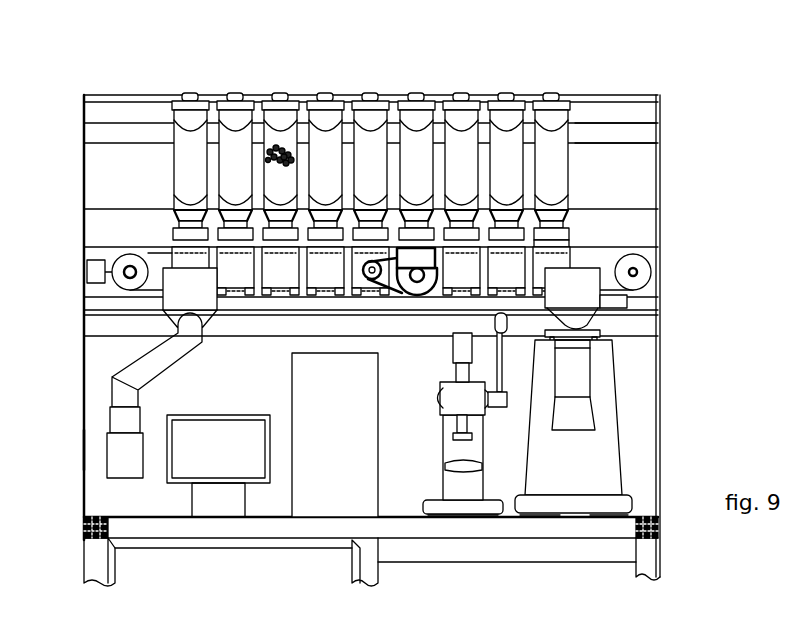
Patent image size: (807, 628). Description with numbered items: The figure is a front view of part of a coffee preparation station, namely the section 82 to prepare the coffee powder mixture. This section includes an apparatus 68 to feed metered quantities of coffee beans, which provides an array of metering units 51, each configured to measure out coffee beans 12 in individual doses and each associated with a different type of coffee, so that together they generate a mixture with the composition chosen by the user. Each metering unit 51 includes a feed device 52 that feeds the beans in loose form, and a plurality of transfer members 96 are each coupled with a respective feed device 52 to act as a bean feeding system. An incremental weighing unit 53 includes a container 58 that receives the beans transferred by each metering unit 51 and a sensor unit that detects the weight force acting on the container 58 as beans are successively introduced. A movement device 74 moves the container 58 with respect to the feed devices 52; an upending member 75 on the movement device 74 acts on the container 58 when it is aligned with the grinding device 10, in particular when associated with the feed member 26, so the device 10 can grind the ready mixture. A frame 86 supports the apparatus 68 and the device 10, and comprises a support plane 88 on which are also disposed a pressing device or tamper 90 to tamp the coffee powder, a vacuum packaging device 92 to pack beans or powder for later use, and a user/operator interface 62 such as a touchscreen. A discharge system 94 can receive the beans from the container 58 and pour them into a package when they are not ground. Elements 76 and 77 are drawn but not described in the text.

The section to prepare the coffee powder mixture 82 is at (52, 63).
The transfer members 96 is at (232, 142).
The coffee beans 12 is at (280, 147).
The feed device 52 is at (237, 213).
The metering unit 51 is at (192, 227).
The container 58 is at (418, 257).
The incremental weighing unit 53 is at (447, 258).
The apparatus to feed metered quantities of coffee beans 68 is at (585, 152).
The movement device 74 is at (646, 239).
The left conveyor roller 77 is at (106, 287).
The sensor box 76 is at (93, 272).
The feed member 26 is at (583, 298).
The upending member 75 is at (393, 301).
The discharge system 94 is at (122, 395).
The user/operator interface 62 is at (218, 411).
The vacuum packaging device 92 is at (327, 494).
The pressing device or tamper 90 is at (436, 440).
The device for grinding coffee beans 10 is at (627, 436).
The frame 86 is at (77, 448).
The support plane 88 is at (647, 512).